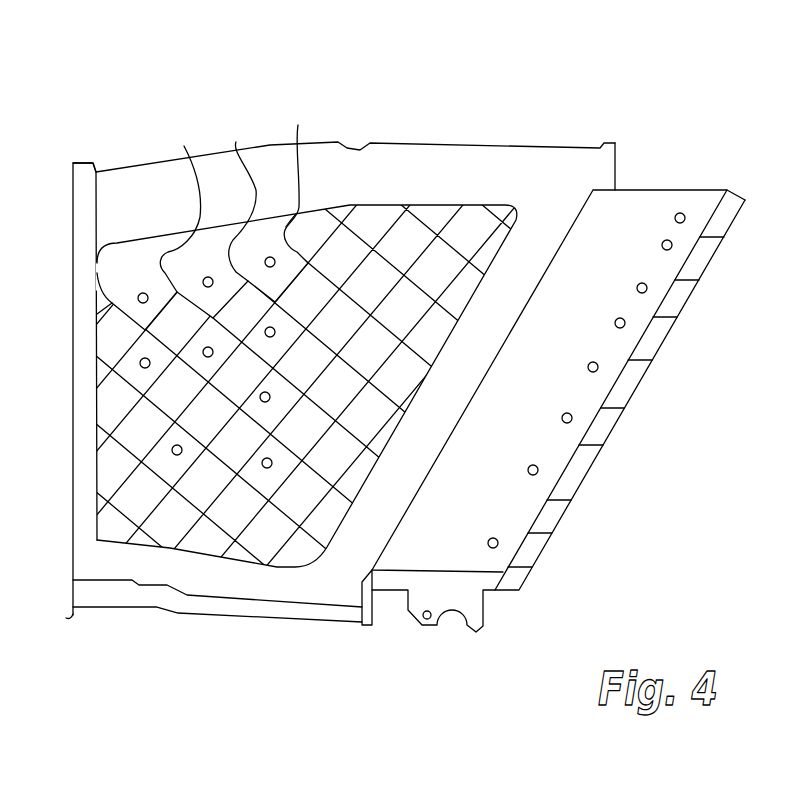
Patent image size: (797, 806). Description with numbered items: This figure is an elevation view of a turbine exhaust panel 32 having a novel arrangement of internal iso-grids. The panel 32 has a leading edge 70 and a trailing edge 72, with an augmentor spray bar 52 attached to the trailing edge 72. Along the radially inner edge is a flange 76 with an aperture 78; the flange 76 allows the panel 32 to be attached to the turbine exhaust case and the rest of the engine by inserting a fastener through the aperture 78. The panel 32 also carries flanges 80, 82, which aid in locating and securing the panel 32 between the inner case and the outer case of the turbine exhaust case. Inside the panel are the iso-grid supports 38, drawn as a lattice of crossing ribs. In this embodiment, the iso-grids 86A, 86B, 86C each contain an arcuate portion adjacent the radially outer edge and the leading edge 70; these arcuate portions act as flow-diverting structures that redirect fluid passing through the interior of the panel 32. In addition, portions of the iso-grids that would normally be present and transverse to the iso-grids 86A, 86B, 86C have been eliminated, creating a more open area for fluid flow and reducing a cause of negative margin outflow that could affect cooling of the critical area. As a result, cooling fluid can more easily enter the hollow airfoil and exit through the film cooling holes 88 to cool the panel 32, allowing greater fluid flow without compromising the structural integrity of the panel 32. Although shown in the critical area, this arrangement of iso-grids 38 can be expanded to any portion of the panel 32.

The turbine exhaust panel 32 is at (129, 112).
The iso-grid supports 38 is at (380, 250).
The augmentor spray bar 52 is at (557, 447).
The leading edge 70 is at (73, 460).
The trailing edge 72 is at (538, 217).
The flange 76 is at (473, 620).
The aperture 78 is at (427, 620).
The flange 80 is at (615, 143).
The flange 82 is at (87, 163).
The iso-grid 86A is at (298, 125).
The iso-grid 86B is at (236, 142).
The iso-grid 86C is at (184, 146).
The film cooling holes 88 is at (140, 361).